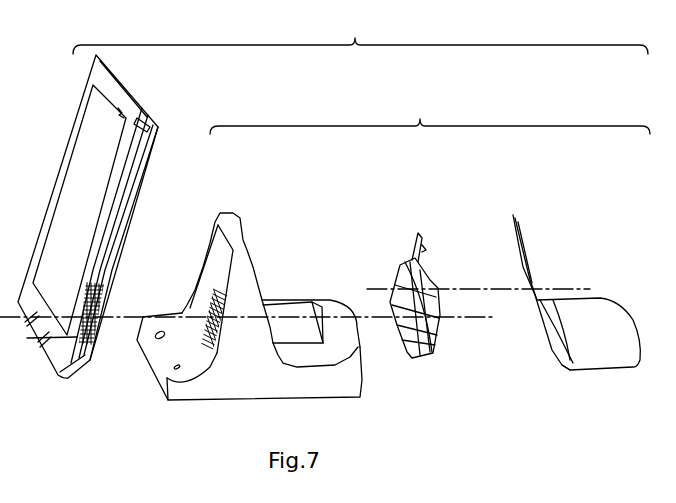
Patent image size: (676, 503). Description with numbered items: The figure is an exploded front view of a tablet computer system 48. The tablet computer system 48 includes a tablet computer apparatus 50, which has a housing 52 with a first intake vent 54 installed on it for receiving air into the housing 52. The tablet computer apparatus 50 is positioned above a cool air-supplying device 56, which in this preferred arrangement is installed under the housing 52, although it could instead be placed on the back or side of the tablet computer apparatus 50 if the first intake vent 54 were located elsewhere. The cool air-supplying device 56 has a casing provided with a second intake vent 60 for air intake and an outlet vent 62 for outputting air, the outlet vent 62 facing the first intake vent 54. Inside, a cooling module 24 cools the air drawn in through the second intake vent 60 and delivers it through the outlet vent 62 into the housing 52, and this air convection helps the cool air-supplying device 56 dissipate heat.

The cooling module 24 is at (413, 358).
The tablet computer system 48 is at (360, 36).
The tablet computer apparatus 50 is at (107, 222).
The housing 52 is at (147, 148).
The first intake vent 54 is at (97, 330).
The cool air-supplying device 56 is at (430, 119).
The second intake vent 60 is at (510, 288).
The outlet vent 62 is at (207, 313).